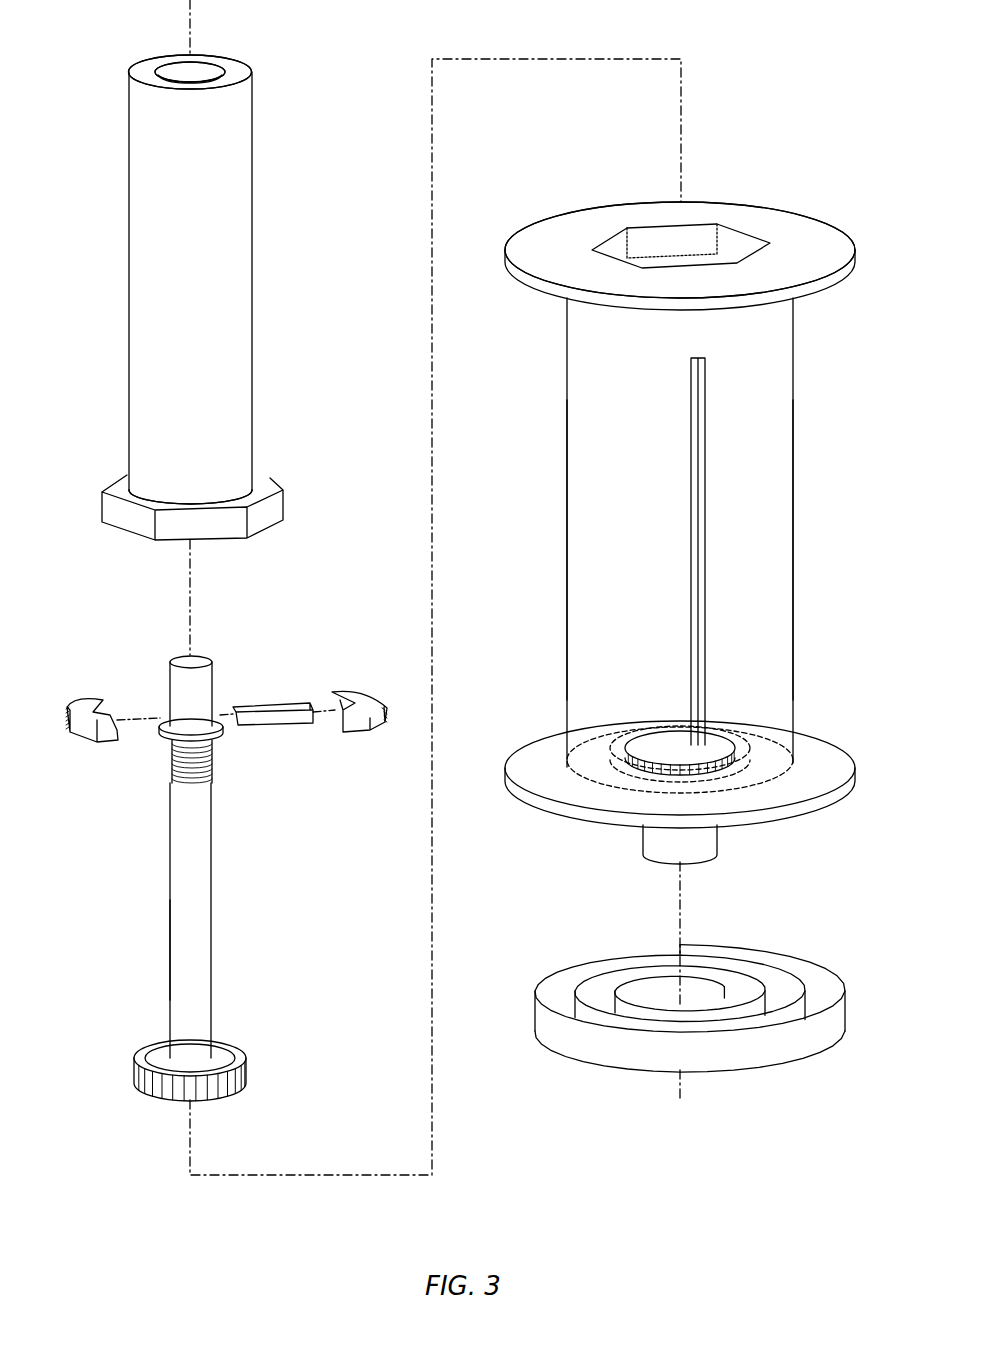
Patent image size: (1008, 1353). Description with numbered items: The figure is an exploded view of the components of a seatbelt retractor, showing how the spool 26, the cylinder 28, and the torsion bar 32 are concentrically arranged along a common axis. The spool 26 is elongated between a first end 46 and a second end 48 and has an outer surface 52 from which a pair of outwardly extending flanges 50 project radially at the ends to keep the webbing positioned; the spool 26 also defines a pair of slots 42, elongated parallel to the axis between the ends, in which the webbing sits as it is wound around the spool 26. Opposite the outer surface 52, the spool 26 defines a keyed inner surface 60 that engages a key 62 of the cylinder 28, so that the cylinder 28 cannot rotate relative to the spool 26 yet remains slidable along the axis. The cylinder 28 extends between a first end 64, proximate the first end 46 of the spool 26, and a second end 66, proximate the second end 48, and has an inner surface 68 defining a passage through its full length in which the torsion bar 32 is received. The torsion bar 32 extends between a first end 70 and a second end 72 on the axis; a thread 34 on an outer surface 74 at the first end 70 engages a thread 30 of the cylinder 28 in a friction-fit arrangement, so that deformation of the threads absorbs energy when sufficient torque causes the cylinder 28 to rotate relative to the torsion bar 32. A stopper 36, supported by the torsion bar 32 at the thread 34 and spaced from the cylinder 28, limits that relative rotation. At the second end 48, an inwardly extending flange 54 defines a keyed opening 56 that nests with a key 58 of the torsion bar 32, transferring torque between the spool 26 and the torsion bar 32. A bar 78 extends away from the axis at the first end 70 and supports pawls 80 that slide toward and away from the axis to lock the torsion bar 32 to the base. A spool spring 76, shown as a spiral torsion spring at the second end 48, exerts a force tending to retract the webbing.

The spool 26 is at (590, 548).
The cylinder 28 is at (145, 282).
The thread 30 is at (175, 72).
The torsion bar 32 is at (200, 912).
The thread 34 is at (205, 772).
The stopper 36 is at (222, 733).
The slots 42 is at (692, 435).
The first end 46 is at (572, 215).
The second end 48 is at (710, 855).
The outwardly extending flanges 50 is at (525, 245).
The outer surface 52 is at (588, 322).
The inwardly extending flange 54 is at (730, 737).
The keyed opening 56 is at (640, 735).
The key 58 is at (225, 1085).
The keyed inner surface 60 is at (735, 232).
The key 62 is at (268, 505).
The first end 64 is at (240, 90).
The second end 66 is at (240, 488).
The inner surface 68 is at (205, 72).
The first end 70 is at (145, 372).
The second end 72 is at (200, 1052).
The outer surface 74 is at (182, 968).
The spool spring 76 is at (740, 1060).
The bar 78 is at (268, 703).
The pawls 80 is at (108, 745).